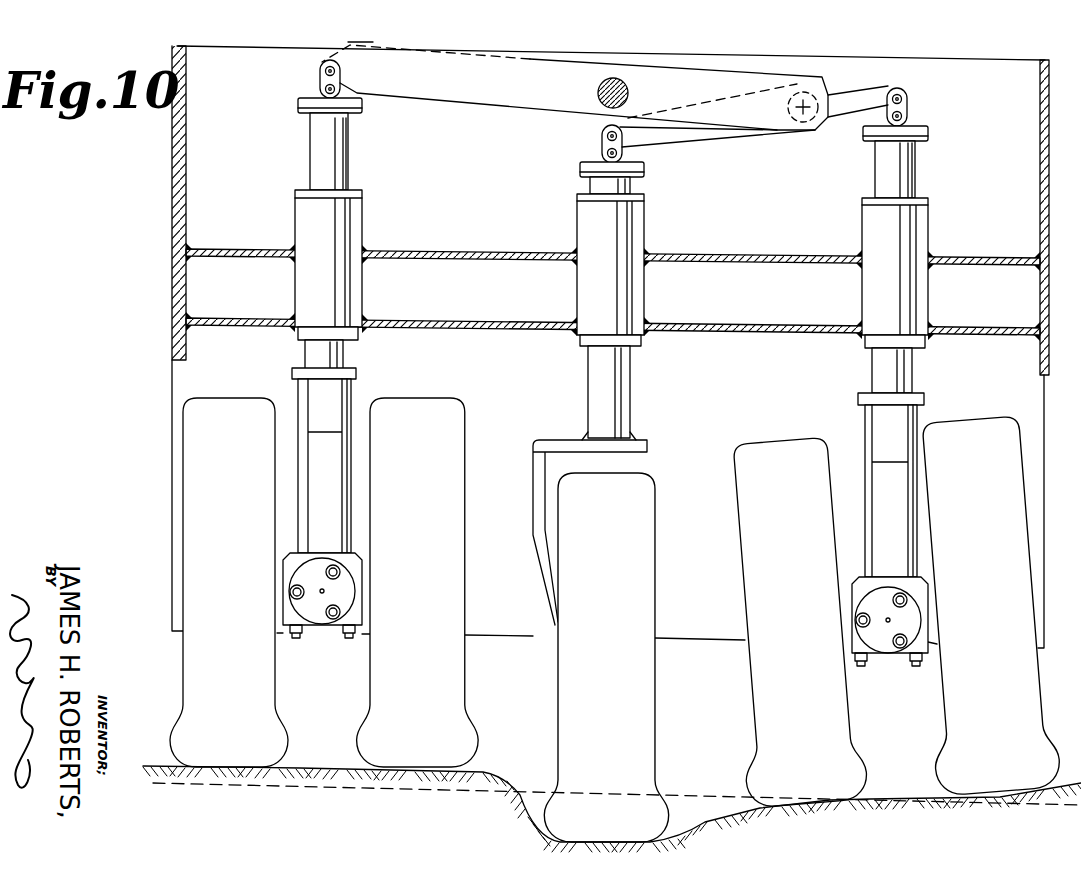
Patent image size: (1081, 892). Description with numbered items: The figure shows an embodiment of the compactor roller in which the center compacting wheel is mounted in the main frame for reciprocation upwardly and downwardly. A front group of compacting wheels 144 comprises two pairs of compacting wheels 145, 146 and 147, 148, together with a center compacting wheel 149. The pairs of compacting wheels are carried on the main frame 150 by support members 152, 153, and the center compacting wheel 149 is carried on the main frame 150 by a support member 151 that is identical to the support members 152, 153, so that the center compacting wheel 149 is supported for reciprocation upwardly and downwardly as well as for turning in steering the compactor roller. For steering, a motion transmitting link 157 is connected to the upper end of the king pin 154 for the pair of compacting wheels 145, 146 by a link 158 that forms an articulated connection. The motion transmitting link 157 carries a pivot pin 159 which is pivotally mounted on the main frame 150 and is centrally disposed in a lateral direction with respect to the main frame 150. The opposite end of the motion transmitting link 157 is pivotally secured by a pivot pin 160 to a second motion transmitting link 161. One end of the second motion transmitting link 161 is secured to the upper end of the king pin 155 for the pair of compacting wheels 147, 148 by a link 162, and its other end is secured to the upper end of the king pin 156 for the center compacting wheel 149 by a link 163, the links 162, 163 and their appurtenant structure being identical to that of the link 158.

The front group of compacting wheels 144 is at (176, 466).
The compacting wheel 145 is at (222, 420).
The compacting wheel 146 is at (412, 418).
The compacting wheel 147 is at (781, 447).
The compacting wheel 148 is at (975, 432).
The center compacting wheel 149 is at (645, 502).
The main frame 150 is at (176, 184).
The support member 151 is at (632, 293).
The support member 152 is at (352, 292).
The support member 153 is at (918, 298).
The king pin 154 is at (316, 145).
The king pin 155 is at (918, 172).
The king pin 156 is at (592, 185).
The motion transmitting link 157 is at (442, 95).
The link 158 is at (320, 77).
The pivot pin 159 is at (600, 92).
The pivot pin 160 is at (805, 118).
The second motion transmitting link 161 is at (688, 133).
The link 162 is at (908, 102).
The link 163 is at (602, 140).